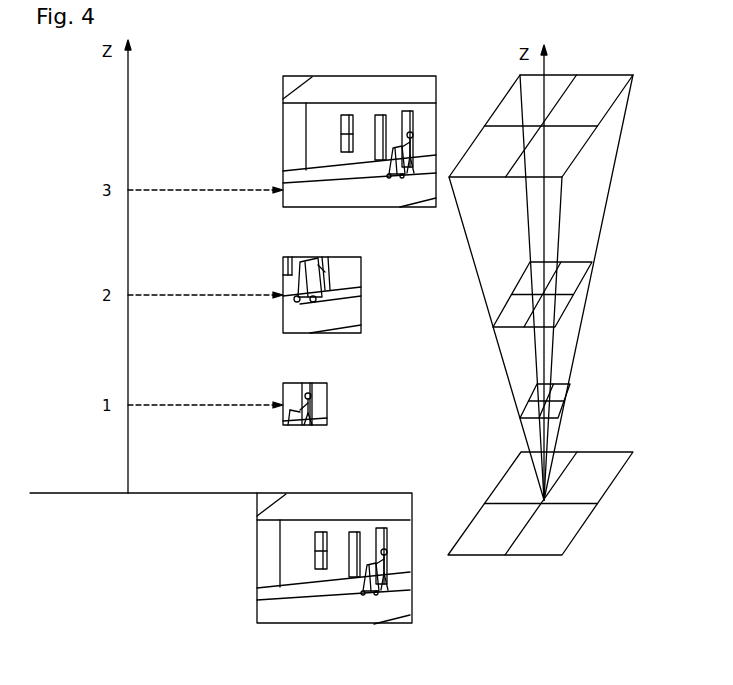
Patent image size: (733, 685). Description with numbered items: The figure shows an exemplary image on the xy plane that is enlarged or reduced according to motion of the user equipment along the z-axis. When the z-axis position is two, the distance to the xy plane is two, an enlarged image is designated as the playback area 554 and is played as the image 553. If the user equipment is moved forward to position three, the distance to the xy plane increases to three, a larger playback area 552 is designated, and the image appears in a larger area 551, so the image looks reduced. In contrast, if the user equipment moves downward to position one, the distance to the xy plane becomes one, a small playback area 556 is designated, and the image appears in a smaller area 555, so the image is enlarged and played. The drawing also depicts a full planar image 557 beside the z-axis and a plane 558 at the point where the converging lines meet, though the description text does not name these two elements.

The larger image area 551 is at (376, 75).
The larger playback area 552 is at (595, 70).
The played image 553 is at (322, 257).
The playback area 554 is at (582, 258).
The smaller image area 555 is at (305, 383).
The small playback area 556 is at (567, 379).
The original displayed image 557 is at (350, 493).
The display plane 558 is at (593, 452).